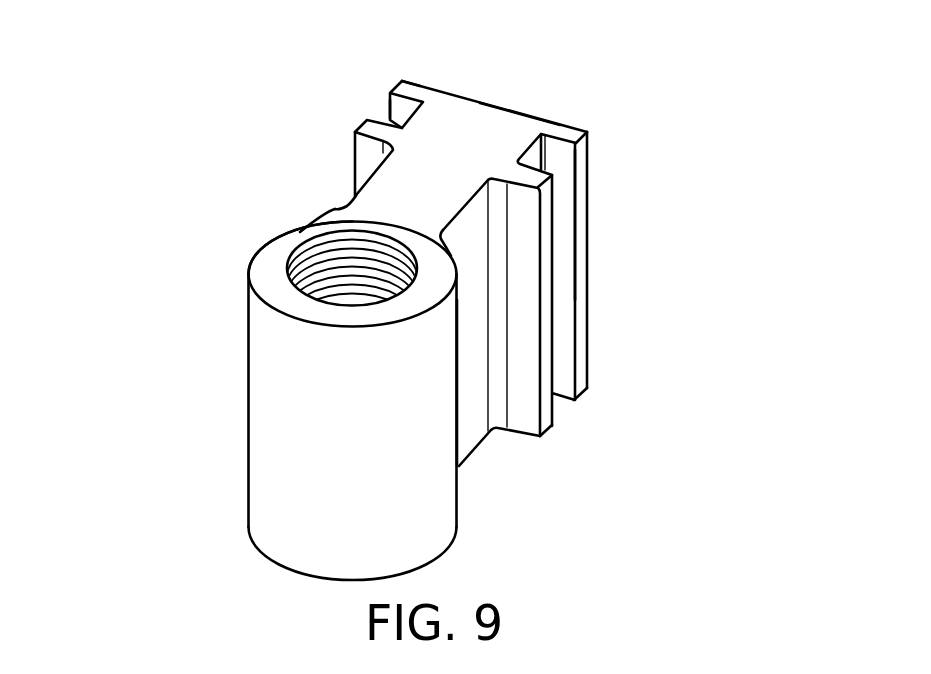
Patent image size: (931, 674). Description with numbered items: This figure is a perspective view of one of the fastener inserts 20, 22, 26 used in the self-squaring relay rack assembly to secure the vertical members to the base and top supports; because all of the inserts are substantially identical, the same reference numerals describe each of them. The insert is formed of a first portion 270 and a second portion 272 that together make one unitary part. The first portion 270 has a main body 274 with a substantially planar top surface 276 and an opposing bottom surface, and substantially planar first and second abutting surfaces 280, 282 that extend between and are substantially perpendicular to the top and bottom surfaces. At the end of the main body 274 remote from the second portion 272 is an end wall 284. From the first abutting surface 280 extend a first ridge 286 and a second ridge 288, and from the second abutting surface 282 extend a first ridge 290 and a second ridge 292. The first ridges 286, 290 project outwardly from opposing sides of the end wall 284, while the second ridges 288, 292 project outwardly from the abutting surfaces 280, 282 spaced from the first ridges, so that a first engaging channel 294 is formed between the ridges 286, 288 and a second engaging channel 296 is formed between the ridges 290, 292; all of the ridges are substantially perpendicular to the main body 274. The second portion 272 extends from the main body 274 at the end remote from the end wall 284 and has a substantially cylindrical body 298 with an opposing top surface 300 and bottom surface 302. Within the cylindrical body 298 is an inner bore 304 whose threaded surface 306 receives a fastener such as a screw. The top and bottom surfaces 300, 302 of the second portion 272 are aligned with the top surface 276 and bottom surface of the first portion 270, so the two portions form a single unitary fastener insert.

The first fastener insert 20 is at (605, 72).
The second fastener insert 22 is at (494, 106).
The fourth fastener insert 26 is at (580, 266).
The first portion 270 is at (378, 98).
The second portion 272 is at (244, 268).
The main body 274 is at (460, 121).
The top surface 276 is at (433, 125).
The first abutting surface 280 is at (367, 180).
The second abutting surface 282 is at (467, 423).
The end wall 284 is at (520, 112).
The first ridge 286 is at (401, 80).
The second ridge 288 is at (364, 125).
The first ridge 290 is at (587, 153).
The second ridge 292 is at (545, 207).
The first engaging channel 294 is at (387, 115).
The second engaging channel 296 is at (576, 161).
The cylindrical body 298 is at (278, 433).
The top surface 300 is at (267, 255).
The bottom surface 302 is at (273, 560).
The inner bore 304 is at (348, 204).
The threaded surface 306 is at (316, 262).